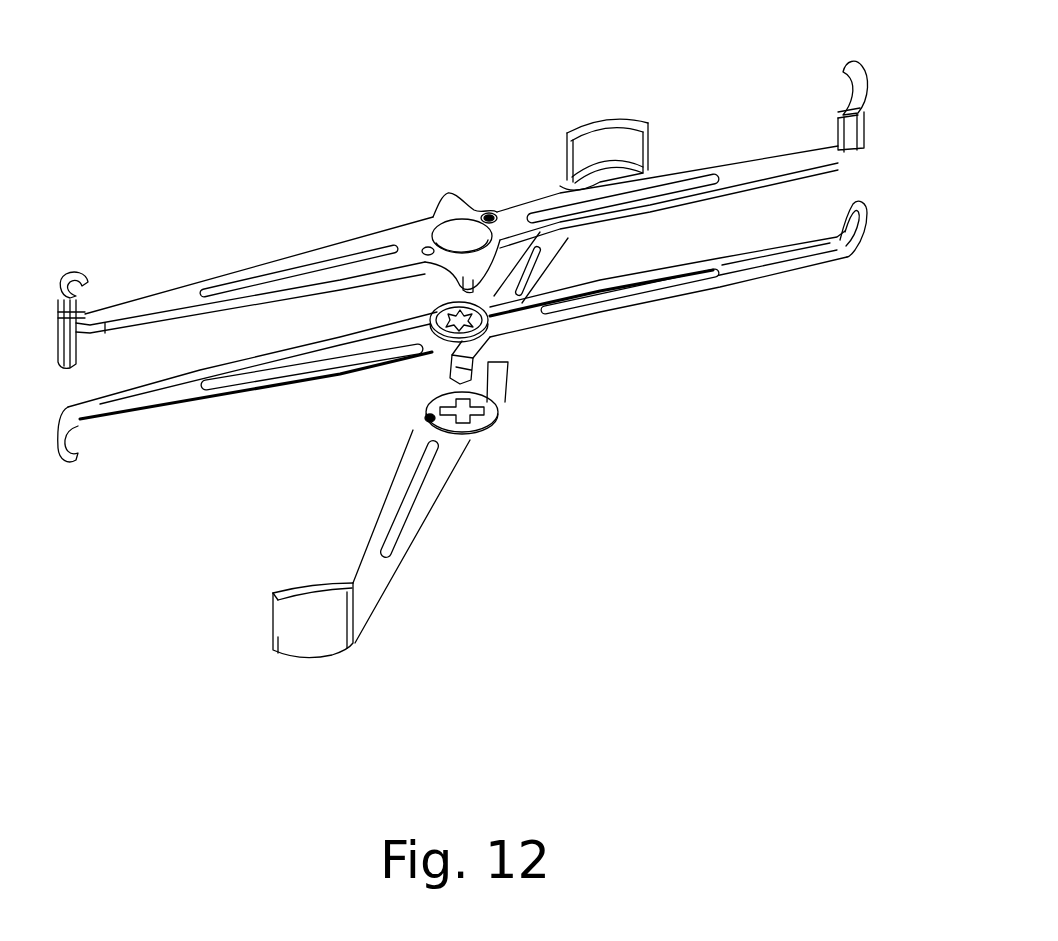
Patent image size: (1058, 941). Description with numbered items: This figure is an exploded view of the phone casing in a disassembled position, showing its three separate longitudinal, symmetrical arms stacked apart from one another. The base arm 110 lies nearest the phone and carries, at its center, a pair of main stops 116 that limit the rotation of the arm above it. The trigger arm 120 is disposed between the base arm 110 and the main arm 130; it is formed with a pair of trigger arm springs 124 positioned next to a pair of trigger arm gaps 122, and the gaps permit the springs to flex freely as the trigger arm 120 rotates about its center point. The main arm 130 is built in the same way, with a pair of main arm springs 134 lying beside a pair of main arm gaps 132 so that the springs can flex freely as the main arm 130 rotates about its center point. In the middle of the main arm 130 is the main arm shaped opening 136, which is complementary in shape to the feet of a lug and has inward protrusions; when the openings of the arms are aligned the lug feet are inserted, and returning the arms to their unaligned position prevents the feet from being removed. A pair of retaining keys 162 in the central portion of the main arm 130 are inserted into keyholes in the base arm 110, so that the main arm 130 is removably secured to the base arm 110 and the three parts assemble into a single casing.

The base arm 110 is at (768, 167).
The main stops 116 is at (447, 205).
The trigger arm 120 is at (778, 266).
The trigger arm gaps 122 is at (327, 362).
The trigger arm springs 124 is at (270, 392).
The main arm 130 is at (303, 623).
The main arm gaps 132 is at (400, 523).
The main arm springs 134 is at (437, 493).
The main arm shaped opening 136 is at (497, 413).
The retaining keys 162 is at (433, 417).